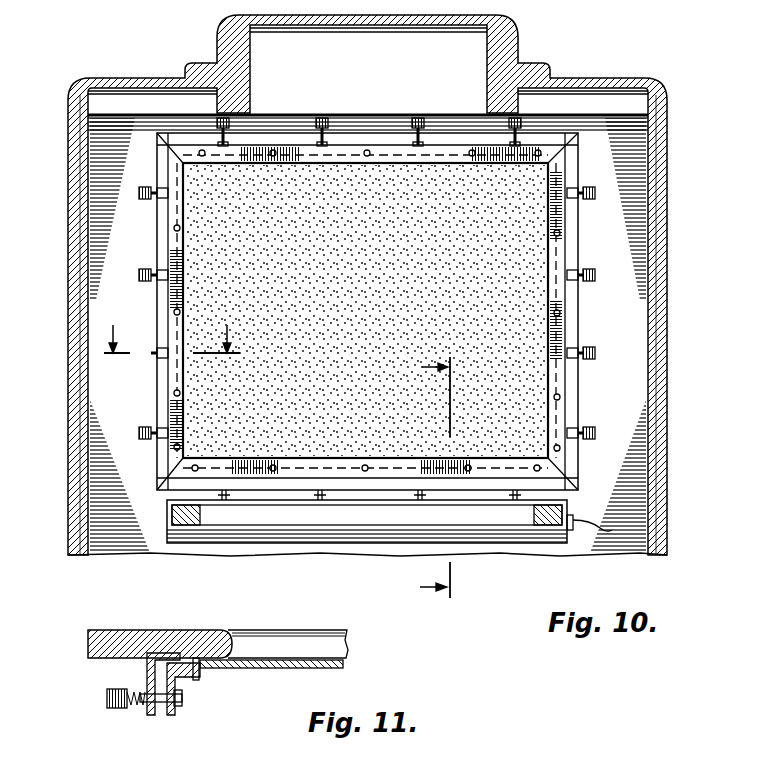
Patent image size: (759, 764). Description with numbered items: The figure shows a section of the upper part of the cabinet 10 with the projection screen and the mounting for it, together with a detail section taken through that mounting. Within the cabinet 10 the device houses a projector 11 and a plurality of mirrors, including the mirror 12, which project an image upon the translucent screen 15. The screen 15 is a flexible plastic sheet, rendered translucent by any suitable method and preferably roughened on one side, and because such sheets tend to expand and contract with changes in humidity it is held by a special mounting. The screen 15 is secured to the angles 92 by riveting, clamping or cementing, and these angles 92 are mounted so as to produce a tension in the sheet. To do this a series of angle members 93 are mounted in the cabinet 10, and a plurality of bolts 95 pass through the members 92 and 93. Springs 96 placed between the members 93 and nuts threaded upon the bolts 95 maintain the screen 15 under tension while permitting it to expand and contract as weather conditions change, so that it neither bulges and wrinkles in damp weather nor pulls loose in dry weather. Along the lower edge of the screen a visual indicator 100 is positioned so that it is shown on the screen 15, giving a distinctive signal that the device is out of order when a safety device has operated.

In FIG. 10, the cabinet 10 is at (64, 203).
In FIG. 11, the cabinet 10 is at (110, 641).
In FIG. 10, the projector 11 is at (175, 336).
In FIG. 10, the mirror 12 is at (431, 478).
In FIG. 10, the translucent screen 15 is at (500, 250).
In FIG. 11, the translucent screen 15 is at (278, 665).
In FIG. 10, the angle 92 is at (432, 152).
In FIG. 11, the angle 92 is at (171, 715).
In FIG. 10, the angle member 93 is at (372, 150).
In FIG. 11, the angle member 93 is at (147, 673).
In FIG. 10, the bolt 95 is at (318, 143).
In FIG. 11, the bolt 95 is at (182, 698).
In FIG. 10, the spring 96 is at (326, 118).
In FIG. 11, the spring 96 is at (128, 708).
In FIG. 10, the visual indicator 100 is at (356, 533).